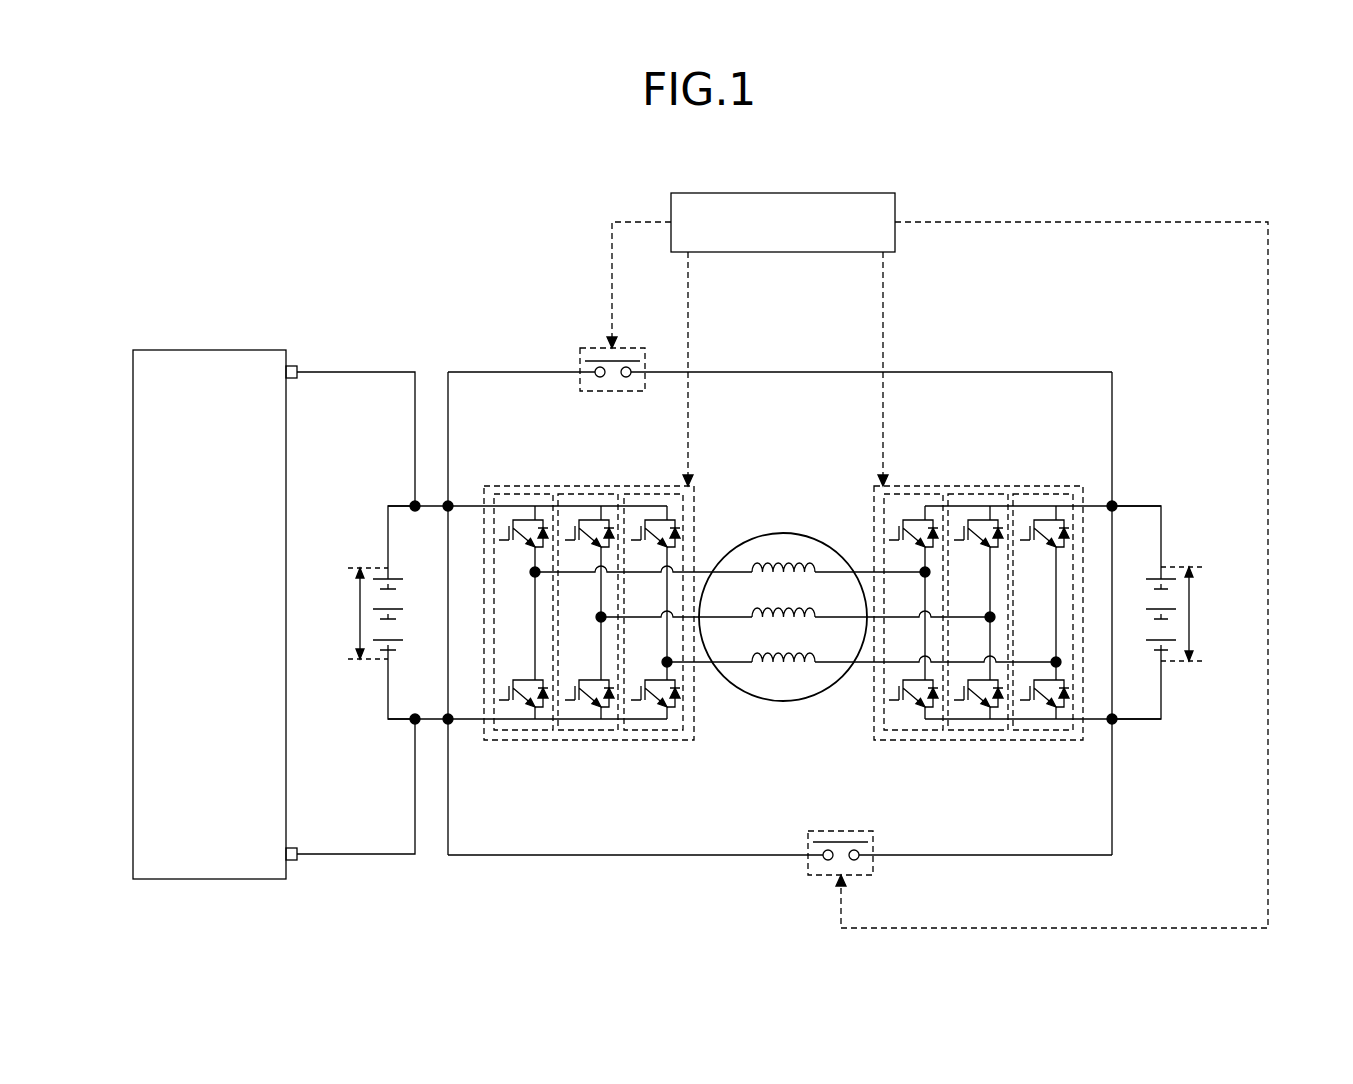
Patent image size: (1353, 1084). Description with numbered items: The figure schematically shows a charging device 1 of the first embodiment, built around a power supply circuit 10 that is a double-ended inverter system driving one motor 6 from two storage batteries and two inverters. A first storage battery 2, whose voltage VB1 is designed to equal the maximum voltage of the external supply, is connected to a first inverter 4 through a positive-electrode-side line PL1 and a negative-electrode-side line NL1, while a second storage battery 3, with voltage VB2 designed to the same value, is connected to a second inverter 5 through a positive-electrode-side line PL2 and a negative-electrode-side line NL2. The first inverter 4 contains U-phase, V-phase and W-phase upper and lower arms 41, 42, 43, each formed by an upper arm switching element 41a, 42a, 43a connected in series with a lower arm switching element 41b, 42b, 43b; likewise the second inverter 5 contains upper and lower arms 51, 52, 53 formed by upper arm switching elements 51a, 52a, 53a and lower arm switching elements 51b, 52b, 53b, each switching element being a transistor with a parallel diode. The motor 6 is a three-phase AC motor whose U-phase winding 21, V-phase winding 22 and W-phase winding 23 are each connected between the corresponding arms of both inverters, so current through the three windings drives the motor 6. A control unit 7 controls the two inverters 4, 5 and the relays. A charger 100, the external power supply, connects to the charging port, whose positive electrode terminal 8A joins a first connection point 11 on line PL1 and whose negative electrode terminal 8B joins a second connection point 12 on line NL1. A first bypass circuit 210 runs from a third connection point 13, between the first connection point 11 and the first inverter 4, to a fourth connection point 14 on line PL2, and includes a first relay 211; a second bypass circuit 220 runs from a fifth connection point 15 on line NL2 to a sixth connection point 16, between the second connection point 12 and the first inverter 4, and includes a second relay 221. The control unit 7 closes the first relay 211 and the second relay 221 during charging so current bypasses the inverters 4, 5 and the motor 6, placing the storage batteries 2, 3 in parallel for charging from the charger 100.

The charging device 1 is at (1088, 190).
The power supply circuit 10 is at (843, 603).
The charger 100 is at (232, 350).
The positive electrode terminal 8A is at (290, 365).
The negative electrode terminal 8B is at (296, 862).
The first storage battery 2 is at (362, 612).
The second storage battery 3 is at (1175, 612).
The first inverter 4 is at (571, 615).
The second inverter 5 is at (988, 615).
The motor 6 is at (783, 607).
The control unit 7 is at (830, 194).
The first connection point 11 is at (416, 514).
The second connection point 12 is at (412, 715).
The third connection point 13 is at (450, 514).
The fourth connection point 14 is at (1114, 514).
The fifth connection point 15 is at (1112, 715).
The sixth connection point 16 is at (452, 715).
The U-phase winding 21 is at (752, 565).
The V-phase winding 22 is at (800, 612).
The W-phase winding 23 is at (795, 668).
The U-phase upper and lower arms 41 is at (514, 634).
The V-phase upper and lower arms 42 is at (579, 634).
The W-phase upper and lower arms 43 is at (645, 634).
The switching element 41a is at (499, 538).
The switching element 42a is at (565, 538).
The switching element 43a is at (631, 538).
The switching element 41b is at (499, 700).
The switching element 42b is at (565, 700).
The switching element 43b is at (631, 700).
The U-phase upper and lower arms 51 is at (904, 634).
The V-phase upper and lower arms 52 is at (969, 634).
The W-phase upper and lower arms 53 is at (1034, 634).
The switching element 51a is at (889, 538).
The switching element 52a is at (954, 538).
The switching element 53a is at (1020, 538).
The switching element 51b is at (889, 700).
The switching element 52b is at (954, 700).
The switching element 53b is at (1020, 700).
The first bypass circuit 210 is at (772, 370).
The second bypass circuit 220 is at (708, 858).
The first relay 211 is at (600, 348).
The second relay 221 is at (828, 842).
The positive-electrode-side line PL1 is at (402, 504).
The negative-electrode-side line NL1 is at (387, 721).
The positive-electrode-side line PL2 is at (1162, 506).
The negative-electrode-side line NL2 is at (1160, 722).
The voltage of the first storage battery VB1 is at (337, 613).
The voltage of the second storage battery VB2 is at (1212, 614).